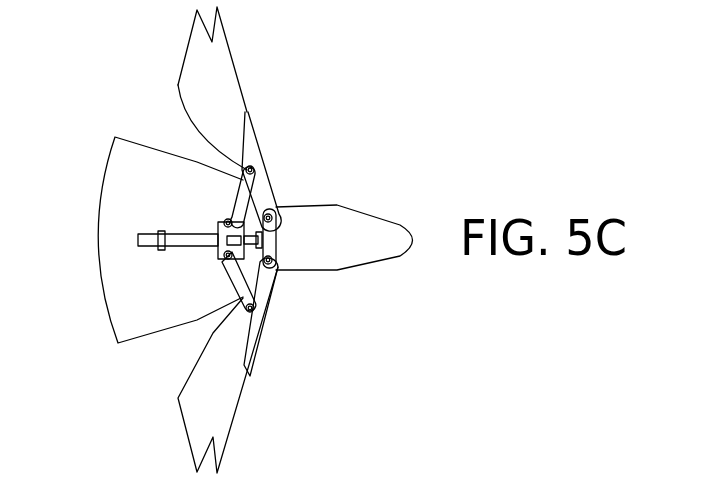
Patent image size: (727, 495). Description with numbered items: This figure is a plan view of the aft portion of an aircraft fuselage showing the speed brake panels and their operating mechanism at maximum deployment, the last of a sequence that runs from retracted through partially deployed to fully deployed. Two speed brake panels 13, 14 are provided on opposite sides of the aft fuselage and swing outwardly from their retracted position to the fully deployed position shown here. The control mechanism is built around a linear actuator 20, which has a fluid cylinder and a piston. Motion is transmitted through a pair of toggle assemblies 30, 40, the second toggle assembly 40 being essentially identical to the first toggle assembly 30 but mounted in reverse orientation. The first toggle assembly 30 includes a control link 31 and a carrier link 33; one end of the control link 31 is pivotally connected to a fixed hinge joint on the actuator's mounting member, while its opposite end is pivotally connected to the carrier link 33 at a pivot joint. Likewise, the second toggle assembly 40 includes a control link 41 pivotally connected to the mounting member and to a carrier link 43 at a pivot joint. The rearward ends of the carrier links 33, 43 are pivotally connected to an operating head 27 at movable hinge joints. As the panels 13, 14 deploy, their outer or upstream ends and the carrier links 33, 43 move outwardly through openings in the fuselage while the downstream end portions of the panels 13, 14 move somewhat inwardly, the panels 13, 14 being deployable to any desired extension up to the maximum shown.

The speed brake panel 13 is at (222, 430).
The speed brake panel 14 is at (230, 38).
The linear actuator 20 is at (157, 246).
The operating head 27 is at (273, 243).
The first toggle assembly 30 is at (252, 337).
The control link 31 is at (240, 302).
The carrier link 33 is at (270, 297).
The second toggle assembly 40 is at (259, 152).
The control link 41 is at (242, 176).
The carrier link 43 is at (270, 173).